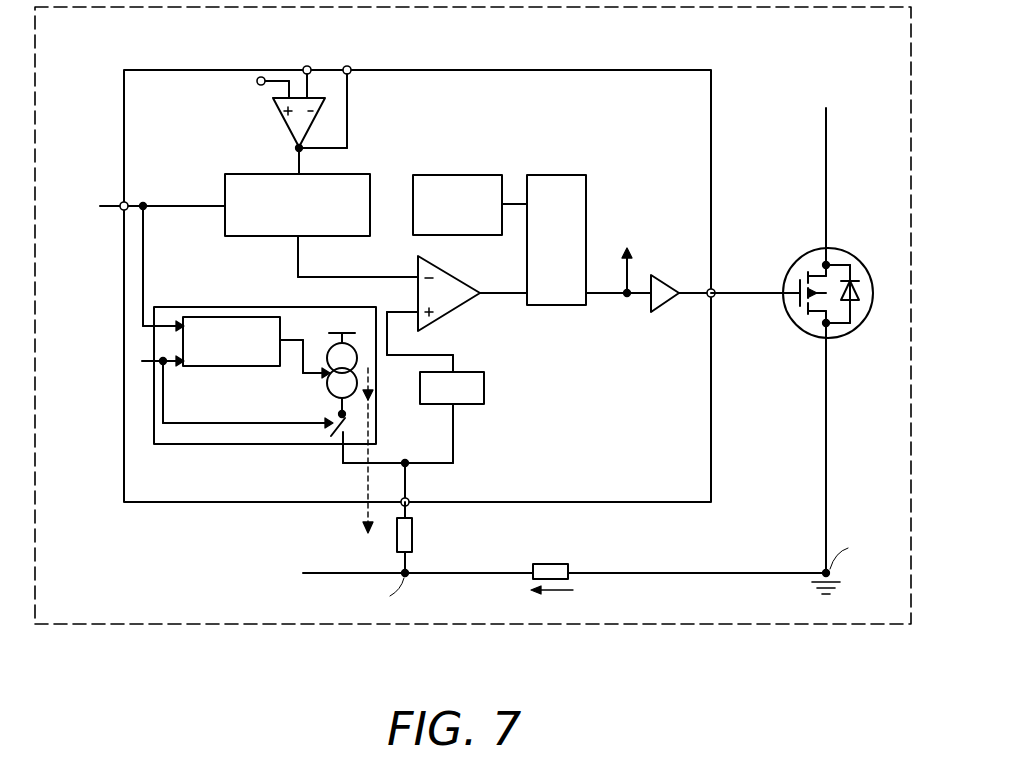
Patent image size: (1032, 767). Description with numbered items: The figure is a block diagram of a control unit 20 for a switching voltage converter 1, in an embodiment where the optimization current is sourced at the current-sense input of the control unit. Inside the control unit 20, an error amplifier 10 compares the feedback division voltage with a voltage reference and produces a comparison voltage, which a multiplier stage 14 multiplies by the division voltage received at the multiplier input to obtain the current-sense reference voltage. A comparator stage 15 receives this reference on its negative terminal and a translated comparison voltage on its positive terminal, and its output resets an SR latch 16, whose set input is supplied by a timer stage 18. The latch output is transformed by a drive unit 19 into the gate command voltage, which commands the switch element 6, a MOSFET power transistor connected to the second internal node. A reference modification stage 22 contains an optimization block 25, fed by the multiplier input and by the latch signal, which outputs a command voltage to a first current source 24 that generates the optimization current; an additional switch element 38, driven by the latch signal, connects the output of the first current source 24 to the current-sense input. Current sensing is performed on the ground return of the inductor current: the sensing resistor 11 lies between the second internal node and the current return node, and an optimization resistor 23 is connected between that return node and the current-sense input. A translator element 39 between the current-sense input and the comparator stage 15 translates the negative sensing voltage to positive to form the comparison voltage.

The voltage converter 1 is at (138, 624).
The switch element 6 is at (820, 273).
The error amplifier 10 is at (297, 118).
The sensing resistor 11 is at (566, 565).
The multiplier stage 14 is at (370, 176).
The comparator stage 15 is at (455, 308).
The SR latch 16 is at (588, 204).
The timer stage 18 is at (462, 175).
The drive unit 19 is at (665, 284).
The control unit 20 is at (156, 503).
The reference modification stage 22 is at (217, 446).
The optimization resistor 23 is at (395, 536).
The first current source 24 is at (328, 390).
The optimization block 25 is at (204, 318).
The switch element 38 is at (350, 426).
The translator element 39 is at (486, 386).